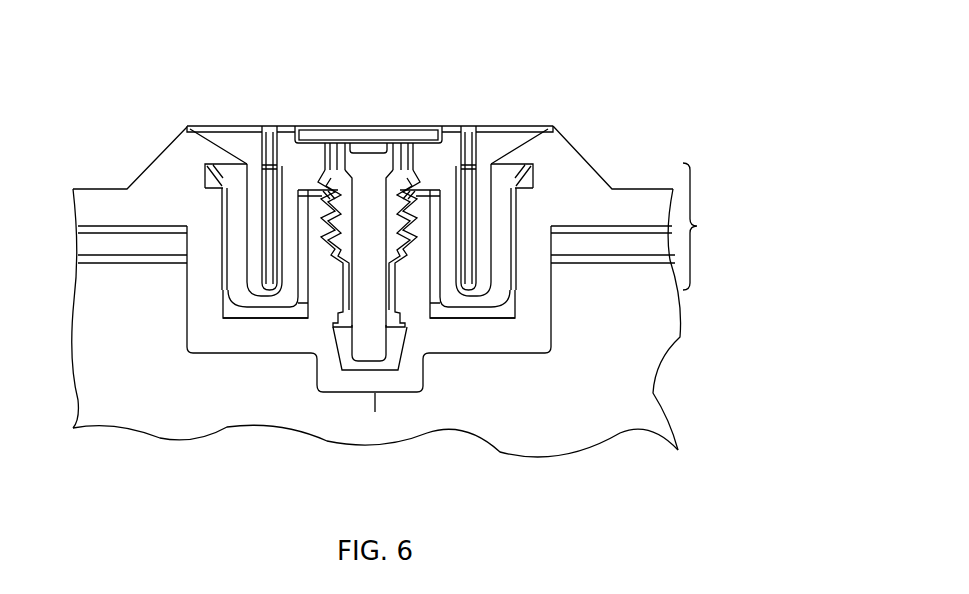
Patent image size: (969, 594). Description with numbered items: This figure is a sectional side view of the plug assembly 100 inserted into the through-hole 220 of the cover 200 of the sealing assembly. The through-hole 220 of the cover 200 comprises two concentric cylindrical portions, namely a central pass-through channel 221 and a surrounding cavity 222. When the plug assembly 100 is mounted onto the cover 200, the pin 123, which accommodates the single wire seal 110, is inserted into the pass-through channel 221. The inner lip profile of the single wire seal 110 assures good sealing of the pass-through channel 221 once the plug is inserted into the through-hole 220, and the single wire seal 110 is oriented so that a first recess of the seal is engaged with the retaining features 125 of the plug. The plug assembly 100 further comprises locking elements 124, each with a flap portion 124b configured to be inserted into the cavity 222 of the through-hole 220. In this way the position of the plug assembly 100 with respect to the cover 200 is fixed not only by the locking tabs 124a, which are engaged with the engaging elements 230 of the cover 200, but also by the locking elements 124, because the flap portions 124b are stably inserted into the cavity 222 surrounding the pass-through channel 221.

The plug assembly 100 is at (453, 104).
The single wire seal 110 is at (332, 275).
The pin 123 is at (372, 338).
The locking elements 124 is at (709, 226).
The locking tabs 124a is at (545, 176).
The flap portion 124b is at (524, 274).
The retaining features 125 is at (326, 185).
The cover 200 is at (703, 301).
The through-hole 220 is at (600, 135).
The pass-through channel 221 is at (387, 386).
The cavity 222 is at (240, 325).
The engaging elements 230 is at (196, 150).